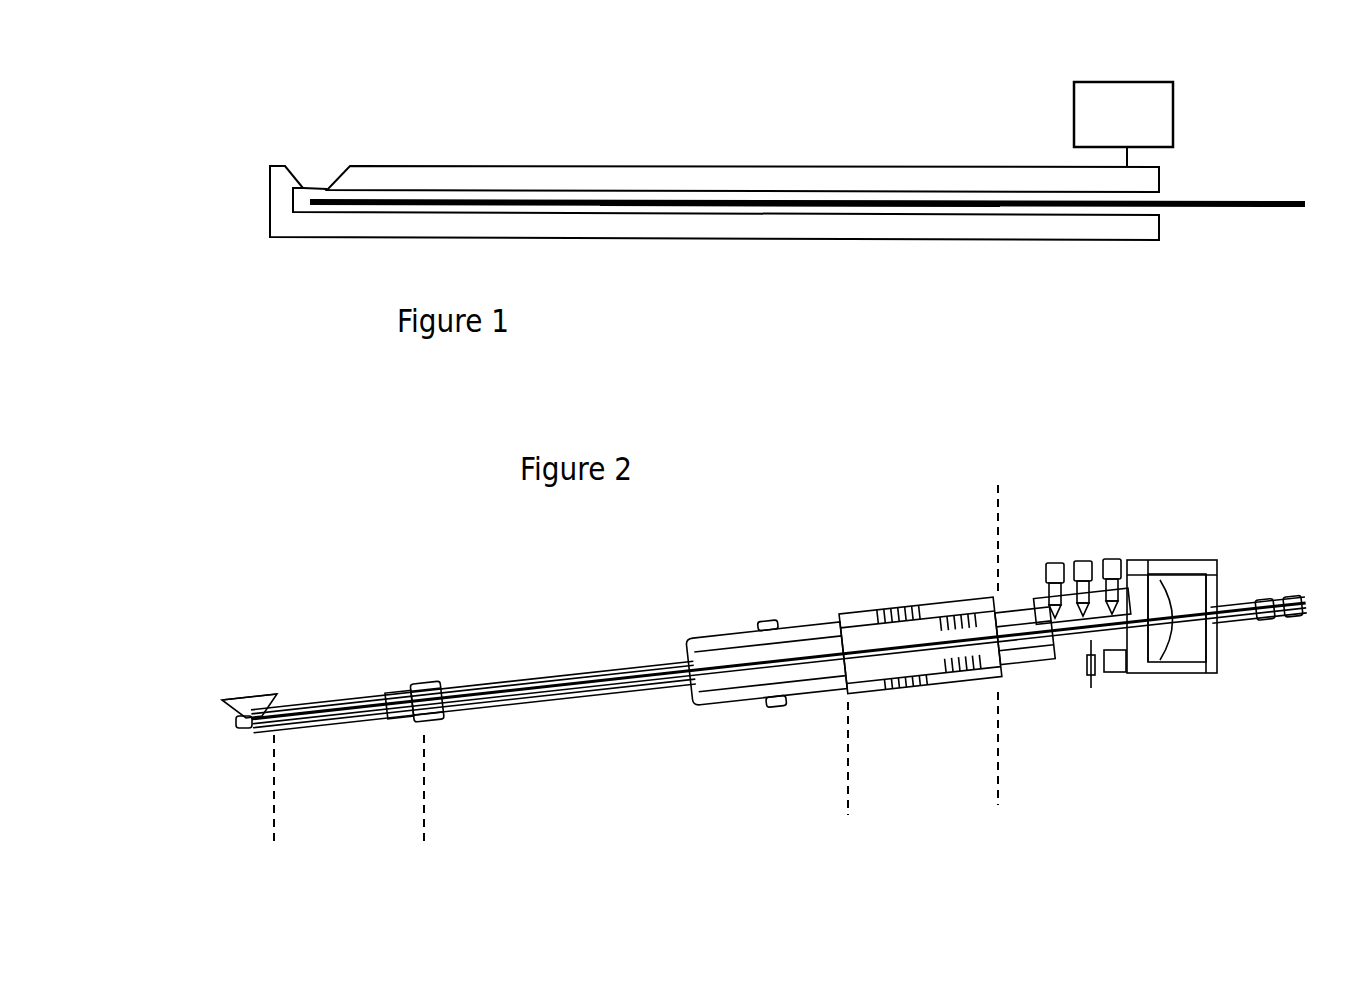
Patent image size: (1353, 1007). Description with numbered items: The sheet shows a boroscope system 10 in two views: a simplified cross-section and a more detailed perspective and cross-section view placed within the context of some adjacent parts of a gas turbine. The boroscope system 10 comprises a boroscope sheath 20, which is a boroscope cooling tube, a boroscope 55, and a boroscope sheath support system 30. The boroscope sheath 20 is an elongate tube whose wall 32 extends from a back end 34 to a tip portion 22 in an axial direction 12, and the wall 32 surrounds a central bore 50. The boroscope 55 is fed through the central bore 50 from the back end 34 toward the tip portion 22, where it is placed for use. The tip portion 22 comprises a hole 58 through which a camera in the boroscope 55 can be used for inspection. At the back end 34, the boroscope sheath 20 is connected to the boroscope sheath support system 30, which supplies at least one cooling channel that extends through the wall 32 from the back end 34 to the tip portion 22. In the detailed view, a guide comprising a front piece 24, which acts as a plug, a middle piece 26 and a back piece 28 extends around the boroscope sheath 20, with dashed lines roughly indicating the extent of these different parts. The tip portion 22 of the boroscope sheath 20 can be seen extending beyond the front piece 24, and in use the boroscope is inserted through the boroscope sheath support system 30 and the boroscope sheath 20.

In FIG. 1, the boroscope system 10 is at (896, 295).
In FIG. 2, the boroscope system 10 is at (442, 483).
In FIG. 1, the axial direction 12 is at (1078, 312).
In FIG. 2, the axial direction 12 is at (715, 743).
In FIG. 1, the boroscope sheath 20 is at (543, 165).
In FIG. 2, the boroscope sheath 20 is at (493, 690).
In FIG. 1, the tip portion 22 is at (299, 260).
In FIG. 2, the tip portion 22 is at (242, 760).
In FIG. 2, the front piece 24 is at (378, 722).
In FIG. 2, the middle piece 26 is at (643, 690).
In FIG. 2, the back piece 28 is at (883, 663).
In FIG. 1, the boroscope sheath support system 30 is at (1072, 133).
In FIG. 2, the boroscope sheath support system 30 is at (1134, 525).
In FIG. 1, the wall 32 is at (680, 172).
In FIG. 1, the back end 34 is at (1161, 222).
In FIG. 1, the central bore 50 is at (740, 197).
In FIG. 1, the boroscope 55 is at (850, 197).
In FIG. 1, the hole 58 is at (317, 177).